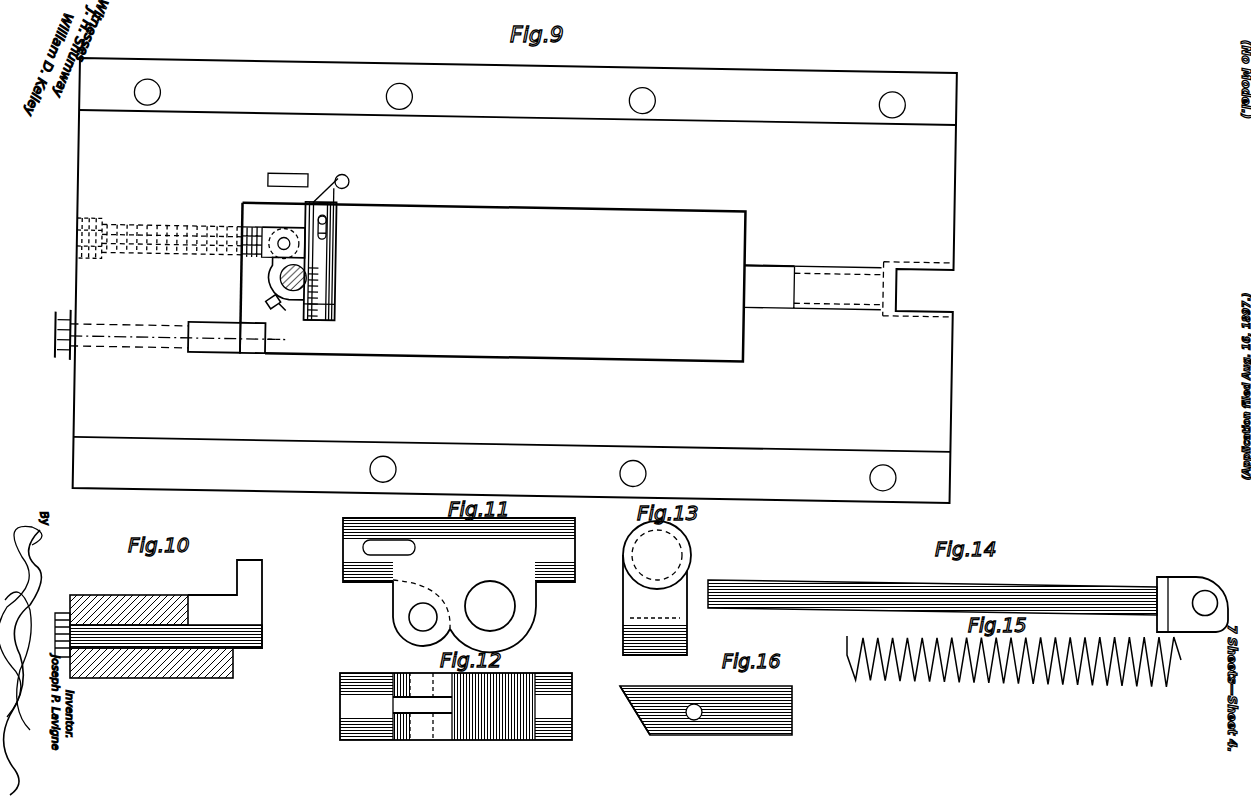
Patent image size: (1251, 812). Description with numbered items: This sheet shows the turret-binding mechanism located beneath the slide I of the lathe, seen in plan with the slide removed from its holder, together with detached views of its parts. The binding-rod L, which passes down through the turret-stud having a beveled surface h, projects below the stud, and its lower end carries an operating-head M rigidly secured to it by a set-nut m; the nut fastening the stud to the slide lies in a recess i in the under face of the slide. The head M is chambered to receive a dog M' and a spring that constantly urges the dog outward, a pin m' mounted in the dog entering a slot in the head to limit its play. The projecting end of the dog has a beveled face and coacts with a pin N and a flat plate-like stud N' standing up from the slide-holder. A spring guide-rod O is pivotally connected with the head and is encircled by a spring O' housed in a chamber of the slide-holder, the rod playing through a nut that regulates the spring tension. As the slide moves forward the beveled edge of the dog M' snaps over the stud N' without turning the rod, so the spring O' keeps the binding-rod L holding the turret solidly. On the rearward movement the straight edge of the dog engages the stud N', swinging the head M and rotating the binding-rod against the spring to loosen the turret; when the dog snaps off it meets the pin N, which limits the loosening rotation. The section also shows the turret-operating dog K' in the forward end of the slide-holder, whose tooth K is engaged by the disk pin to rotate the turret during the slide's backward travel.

In FIG. 9, the slide I is at (515, 280).
In FIG. 10, the slide I is at (144, 624).
In FIG. 9, the beveled surface of the turret-stud h is at (60, 333).
In FIG. 9, the recess in the under face of the slide i is at (277, 338).
In FIG. 9, the tooth of the turret-operating dog K is at (253, 338).
In FIG. 10, the tooth of the turret-operating dog K is at (225, 604).
In FIG. 9, the turret-operating dog K' is at (214, 337).
In FIG. 10, the turret-operating dog K' is at (166, 636).
In FIG. 9, the binding-rod L is at (306, 271).
In FIG. 9, the operating-head M is at (253, 263).
In FIG. 11, the operating-head M is at (459, 585).
In FIG. 13, the operating-head M is at (670, 588).
In FIG. 9, the dog M' is at (347, 251).
In FIG. 16, the dog M' is at (706, 725).
In FIG. 9, the set-nut m is at (286, 316).
In FIG. 9, the pin m' is at (347, 225).
In FIG. 16, the pin m' is at (692, 694).
In FIG. 9, the pin N is at (355, 166).
In FIG. 9, the flat plate-like stud N' is at (288, 166).
In FIG. 14, the spring guide-rod O is at (968, 593).
In FIG. 15, the spring O' is at (1014, 670).